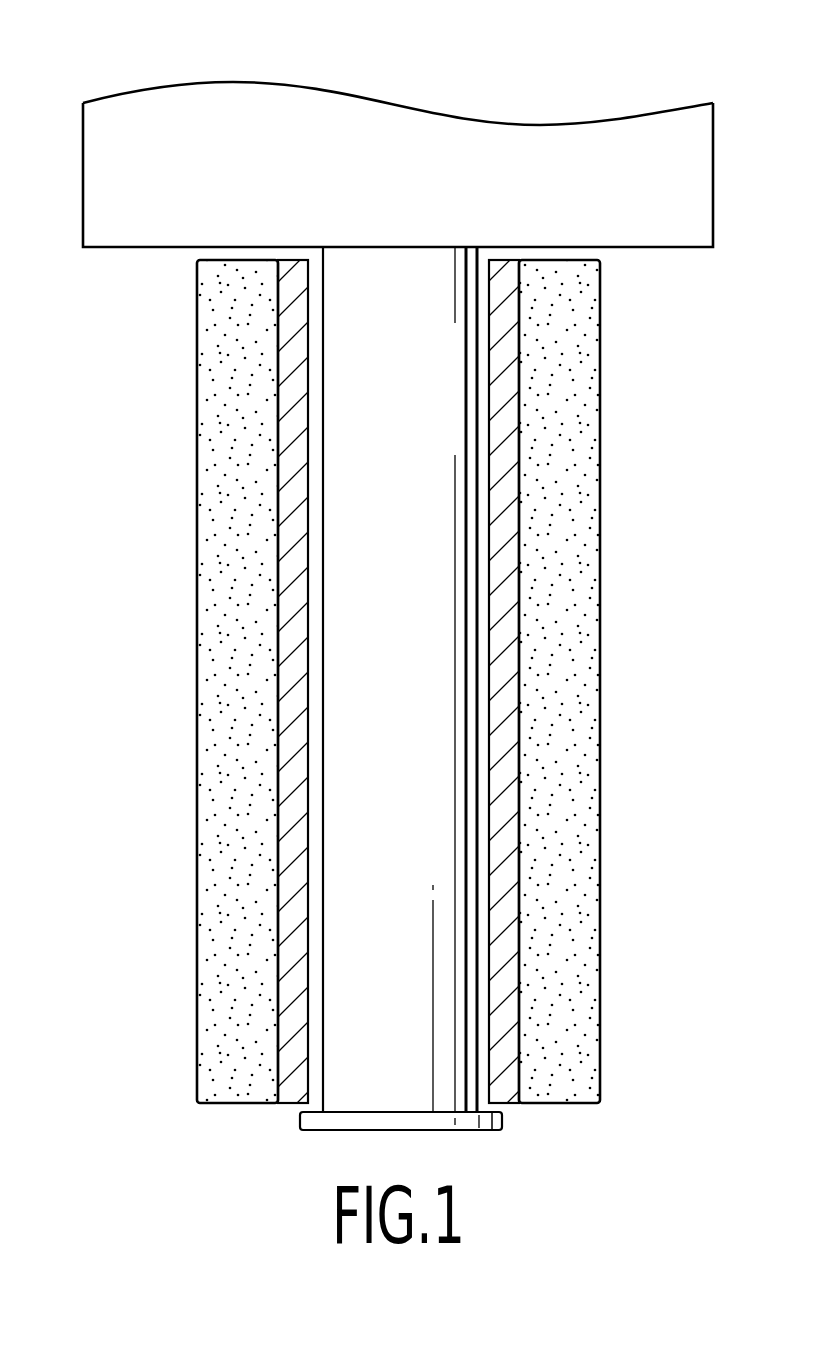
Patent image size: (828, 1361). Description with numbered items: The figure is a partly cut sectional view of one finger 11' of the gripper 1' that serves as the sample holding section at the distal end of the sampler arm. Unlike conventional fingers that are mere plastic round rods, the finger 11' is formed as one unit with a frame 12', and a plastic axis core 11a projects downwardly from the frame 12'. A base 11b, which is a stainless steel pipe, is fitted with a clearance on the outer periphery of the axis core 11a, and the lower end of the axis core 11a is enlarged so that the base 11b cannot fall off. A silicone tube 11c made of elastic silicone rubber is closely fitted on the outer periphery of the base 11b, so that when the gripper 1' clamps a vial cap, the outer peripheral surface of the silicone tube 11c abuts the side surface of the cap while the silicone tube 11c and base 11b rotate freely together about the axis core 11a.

The gripper 1' is at (426, 574).
The frame 12' is at (446, 164).
The finger 11' is at (371, 689).
The axis core 11a is at (437, 492).
The base 11b is at (502, 593).
The silicone tube 11c is at (562, 688).